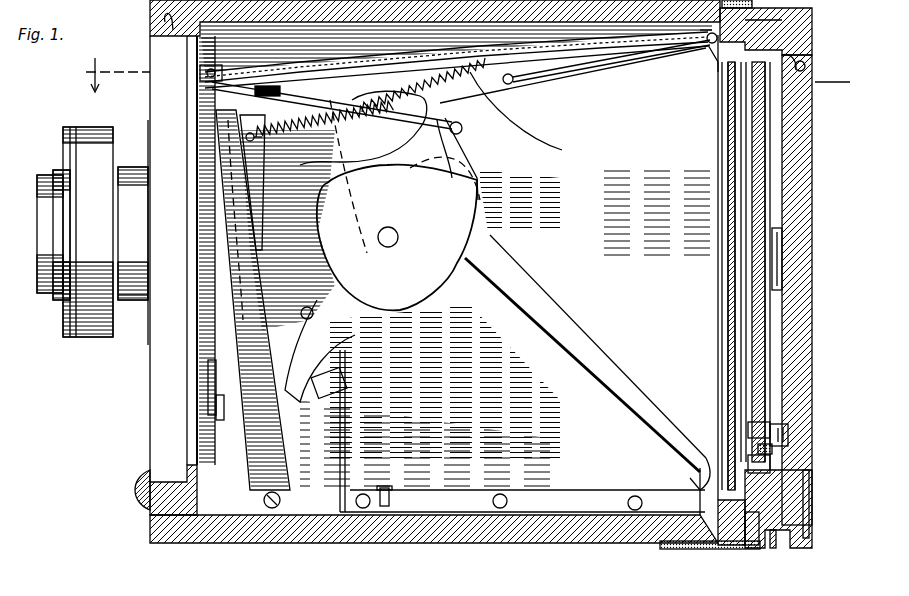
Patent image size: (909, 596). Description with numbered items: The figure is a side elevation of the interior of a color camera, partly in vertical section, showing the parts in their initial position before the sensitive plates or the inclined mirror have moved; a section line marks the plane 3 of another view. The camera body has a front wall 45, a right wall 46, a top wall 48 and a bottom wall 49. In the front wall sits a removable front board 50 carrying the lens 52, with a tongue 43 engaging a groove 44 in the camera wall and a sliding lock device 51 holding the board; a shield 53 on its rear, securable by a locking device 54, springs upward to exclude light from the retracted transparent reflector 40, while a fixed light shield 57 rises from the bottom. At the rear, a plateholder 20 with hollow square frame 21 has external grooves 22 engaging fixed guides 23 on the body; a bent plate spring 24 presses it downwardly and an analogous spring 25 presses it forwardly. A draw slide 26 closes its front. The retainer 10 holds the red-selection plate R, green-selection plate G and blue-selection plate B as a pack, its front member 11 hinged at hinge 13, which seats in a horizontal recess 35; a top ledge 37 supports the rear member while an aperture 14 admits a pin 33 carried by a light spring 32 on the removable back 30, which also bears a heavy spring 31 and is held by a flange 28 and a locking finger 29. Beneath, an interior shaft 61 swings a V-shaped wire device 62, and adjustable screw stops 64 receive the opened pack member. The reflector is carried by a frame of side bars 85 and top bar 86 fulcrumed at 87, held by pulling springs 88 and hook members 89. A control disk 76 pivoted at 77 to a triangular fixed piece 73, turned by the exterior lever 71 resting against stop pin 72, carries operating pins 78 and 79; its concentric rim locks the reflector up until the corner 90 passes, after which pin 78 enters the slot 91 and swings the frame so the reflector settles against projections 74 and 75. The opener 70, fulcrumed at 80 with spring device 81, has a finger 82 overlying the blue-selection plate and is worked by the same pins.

The sectional plane 3- 3 is at (460, 79).
The groove 44 is at (160, 20).
The tongue 43 is at (193, 36).
The front board or lens carrier 50 is at (162, 276).
The front wall 45 is at (160, 522).
The sliding lock device 51 is at (142, 478).
The bottom wall 49 is at (262, 536).
The lens 52 is at (90, 292).
The slot 91 is at (141, 302).
The removable back 30 is at (800, 142).
The external grooves 22 is at (795, 22).
The fixed flanges or guides 23 is at (752, 548).
The hollow square frame 21 is at (800, 44).
The plateholder 20 is at (800, 64).
The flange 28 is at (806, 72).
The locking finger 29 is at (806, 510).
The plate spring 25 is at (762, 548).
The hinge 13 is at (700, 549).
The horizontal recess 35 is at (728, 546).
The interior shaft 61 is at (690, 540).
The front member 11 is at (724, 125).
The blue-selection plate B is at (731, 158).
The green-selection plate G is at (743, 204).
The red-selection plate R is at (760, 178).
The heavy spring 31 is at (778, 252).
The draw slide 26 is at (728, 325).
The retainer 10 is at (765, 362).
The aperture 14 is at (772, 425).
The light spring 32 is at (788, 434).
The pin 33 is at (772, 450).
The top wall 48 is at (643, 46).
The transparent reflector 40 is at (607, 52).
The opener 70 is at (580, 70).
The hook members 89 is at (537, 82).
The pulling spring 88 is at (522, 119).
The bent plate spring 24 is at (709, 43).
The finger 82 is at (709, 42).
The top ledge 37 is at (718, 72).
The top bar 86 is at (203, 70).
The fulcrum 80 is at (208, 85).
The spring device 81 is at (216, 98).
The shield 53 is at (340, 128).
The operating pin 78 is at (455, 136).
The control disk 76 is at (474, 295).
The pivot 77 is at (395, 243).
The operating pin 79 is at (312, 308).
The stop pin 72 is at (279, 182).
The lever 71 is at (297, 156).
The point of disk periphery 90 is at (320, 351).
The side bars 85 is at (253, 300).
The fulcrum 87 is at (272, 492).
The fixed light shield 57 is at (342, 514).
The adjustable screw stops 64 is at (388, 508).
The V-shaped wire device 62 is at (557, 514).
The triangular fixed sheet metal piece 73 is at (548, 336).
The metallic projection 74 is at (540, 240).
The metallic projection 75 is at (703, 432).
The locking device 54 is at (205, 372).
The right wall 46 is at (645, 278).